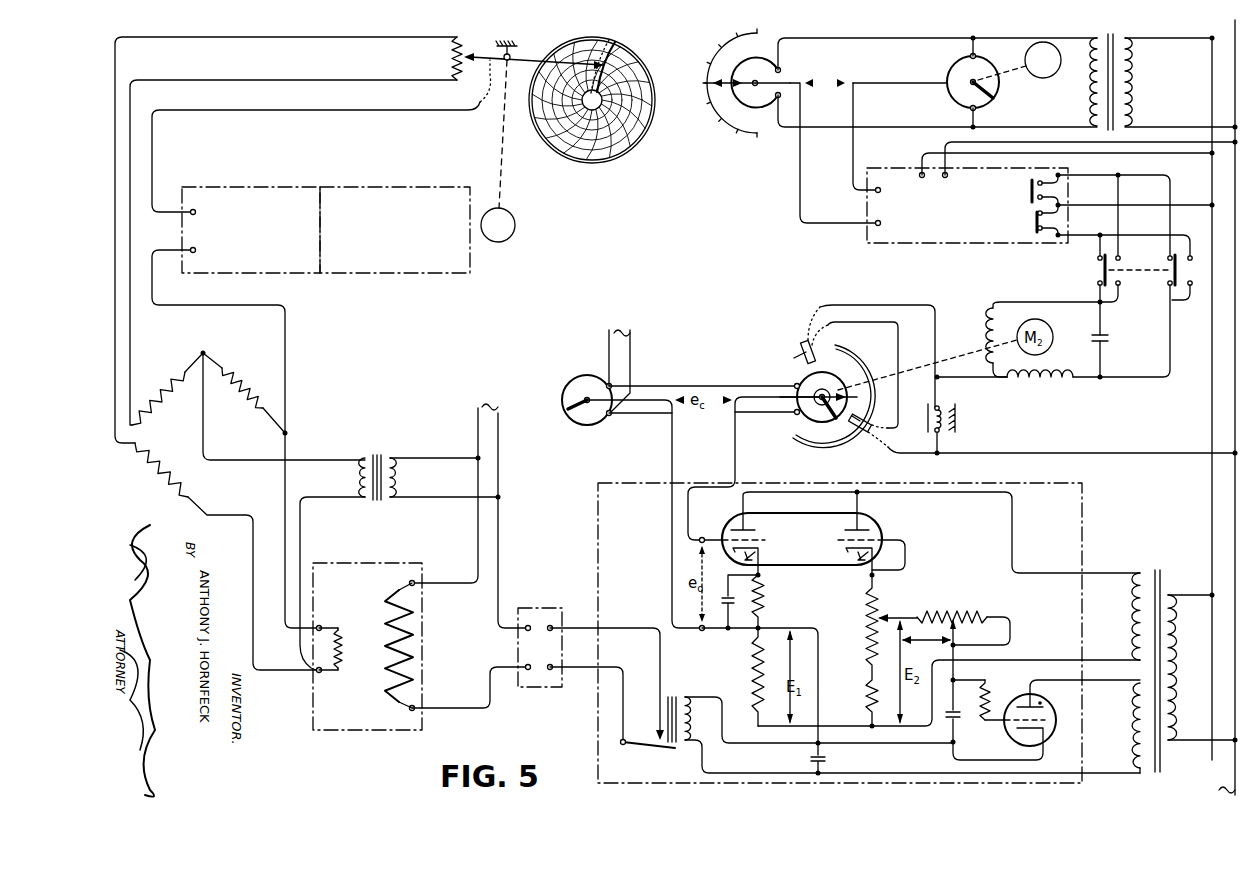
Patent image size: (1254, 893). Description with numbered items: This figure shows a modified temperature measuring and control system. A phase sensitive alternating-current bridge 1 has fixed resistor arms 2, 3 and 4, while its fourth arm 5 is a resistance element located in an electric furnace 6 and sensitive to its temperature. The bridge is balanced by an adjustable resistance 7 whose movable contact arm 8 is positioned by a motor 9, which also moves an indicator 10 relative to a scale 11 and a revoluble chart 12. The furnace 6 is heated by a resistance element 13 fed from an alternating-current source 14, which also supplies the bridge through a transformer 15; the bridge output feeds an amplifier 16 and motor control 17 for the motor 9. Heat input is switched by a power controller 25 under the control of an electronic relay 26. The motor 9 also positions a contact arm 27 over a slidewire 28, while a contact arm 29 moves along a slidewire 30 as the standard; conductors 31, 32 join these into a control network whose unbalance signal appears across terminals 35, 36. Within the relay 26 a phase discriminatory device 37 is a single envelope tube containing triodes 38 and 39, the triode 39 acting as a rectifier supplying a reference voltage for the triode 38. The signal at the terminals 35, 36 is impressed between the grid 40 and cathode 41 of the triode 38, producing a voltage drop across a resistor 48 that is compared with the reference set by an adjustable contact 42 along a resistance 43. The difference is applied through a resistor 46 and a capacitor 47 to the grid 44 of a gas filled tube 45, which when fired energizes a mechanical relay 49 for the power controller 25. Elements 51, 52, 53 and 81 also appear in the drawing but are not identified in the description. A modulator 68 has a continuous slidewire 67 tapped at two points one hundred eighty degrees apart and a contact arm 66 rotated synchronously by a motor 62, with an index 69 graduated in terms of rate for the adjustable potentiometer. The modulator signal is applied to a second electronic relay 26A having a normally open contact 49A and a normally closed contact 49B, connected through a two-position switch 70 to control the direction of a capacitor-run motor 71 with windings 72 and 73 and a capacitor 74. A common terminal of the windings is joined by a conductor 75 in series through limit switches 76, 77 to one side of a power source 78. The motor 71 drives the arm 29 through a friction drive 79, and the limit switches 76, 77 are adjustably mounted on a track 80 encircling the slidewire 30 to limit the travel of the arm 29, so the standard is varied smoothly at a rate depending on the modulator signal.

The phase sensitive A.-C. bridge 1 is at (182, 428).
The fixed resistor arm 2 is at (240, 390).
The fixed resistor arm 3 is at (170, 383).
The fixed resistor arm 4 is at (162, 484).
The fourth arm 5 is at (340, 663).
The electric furnace 6 is at (348, 563).
The adjustable resistance 7 is at (447, 59).
The movable contact arm 8 is at (488, 54).
The motor 9 is at (534, 233).
The indicator 10 is at (528, 54).
The scale 11 is at (622, 42).
The revoluble chart 12 is at (630, 152).
The electric resistance element 13 is at (370, 605).
The A.-C. source 14 is at (492, 446).
The transformer 15 is at (378, 469).
The amplifier 16 is at (251, 230).
The motor control 17 is at (395, 230).
The power controller 25 is at (538, 608).
The electronic relay 26 is at (598, 508).
The electronic relay 26A is at (967, 205).
The contact arm 27 is at (572, 392).
The slidewire 28 is at (582, 426).
The contact arm 29 is at (838, 421).
The slidewire 30 is at (795, 386).
The joining conductor 31 is at (640, 386).
The joining conductor 32 is at (630, 418).
The terminal 35 is at (706, 524).
The terminal 36 is at (702, 632).
The phase discriminatory device 37 is at (805, 566).
The triode 38 is at (738, 510).
The triode 39 is at (893, 510).
The grid 40 is at (770, 538).
The cathode 41 is at (760, 554).
The adjustable contact 42 is at (884, 616).
The resistance 43 is at (854, 633).
The grid 44 is at (1046, 700).
The gas filled tube 45 is at (1058, 730).
The resistor 46 is at (990, 690).
The capacitor 47 is at (960, 718).
The resistor 48 is at (750, 680).
The mechanical relay 49 is at (720, 726).
The normally open contact 49A is at (1030, 200).
The normally closed contact 49B is at (1034, 226).
The voltage span 51 is at (926, 641).
The resistor 52 is at (966, 607).
The adjustable tap 53 is at (960, 645).
The motor 62 is at (1045, 78).
The contact arm 66 is at (973, 83).
The continuous slidewire 67 is at (995, 99).
The modulator 68 is at (978, 55).
The index 69 is at (735, 130).
The two-position switch 70 is at (1155, 261).
The capacitor-run motor 71 is at (1052, 296).
The winding 72 is at (1040, 382).
The winding 73 is at (988, 325).
The capacitor 74 is at (1110, 339).
The conductor 75 is at (866, 305).
The limit switch 76 is at (799, 348).
The limit switch 77 is at (865, 440).
The power source 78 is at (1235, 398).
The friction drive 79 is at (824, 389).
The track 80 is at (822, 451).
The relay coil 81 is at (926, 434).